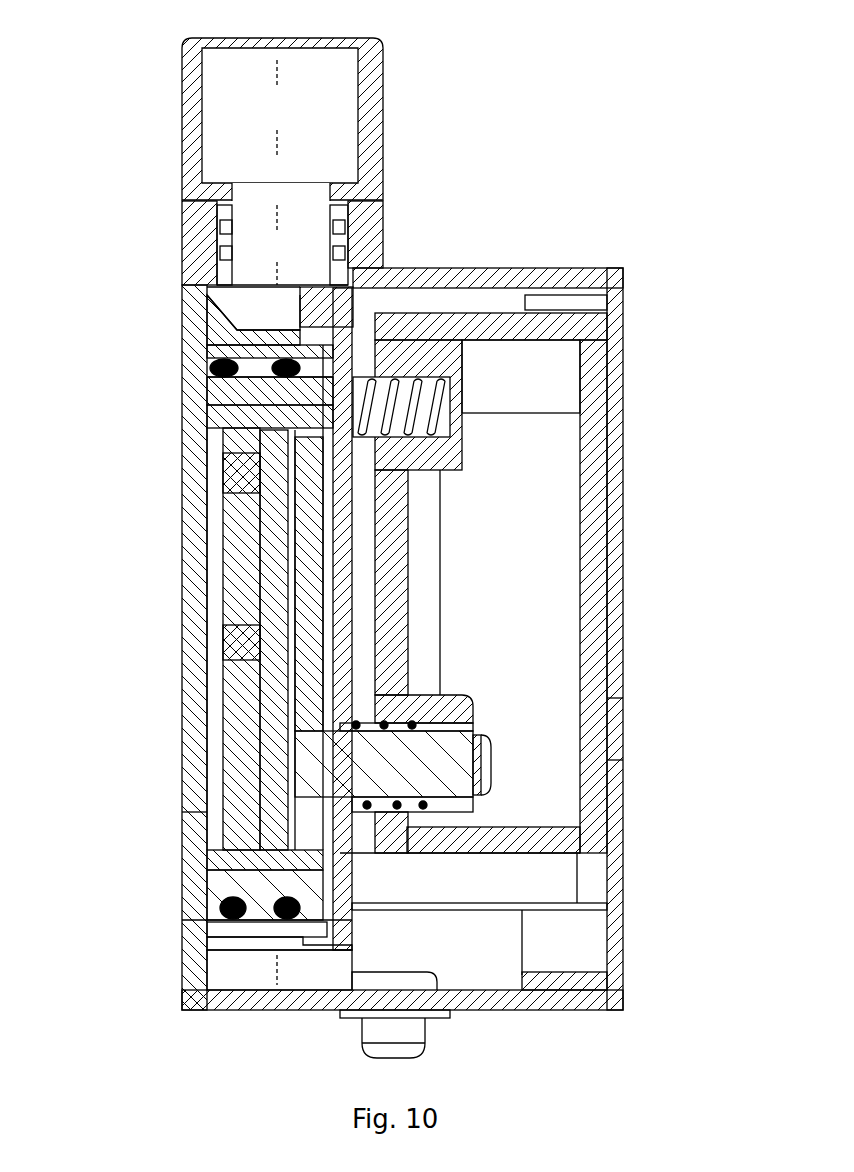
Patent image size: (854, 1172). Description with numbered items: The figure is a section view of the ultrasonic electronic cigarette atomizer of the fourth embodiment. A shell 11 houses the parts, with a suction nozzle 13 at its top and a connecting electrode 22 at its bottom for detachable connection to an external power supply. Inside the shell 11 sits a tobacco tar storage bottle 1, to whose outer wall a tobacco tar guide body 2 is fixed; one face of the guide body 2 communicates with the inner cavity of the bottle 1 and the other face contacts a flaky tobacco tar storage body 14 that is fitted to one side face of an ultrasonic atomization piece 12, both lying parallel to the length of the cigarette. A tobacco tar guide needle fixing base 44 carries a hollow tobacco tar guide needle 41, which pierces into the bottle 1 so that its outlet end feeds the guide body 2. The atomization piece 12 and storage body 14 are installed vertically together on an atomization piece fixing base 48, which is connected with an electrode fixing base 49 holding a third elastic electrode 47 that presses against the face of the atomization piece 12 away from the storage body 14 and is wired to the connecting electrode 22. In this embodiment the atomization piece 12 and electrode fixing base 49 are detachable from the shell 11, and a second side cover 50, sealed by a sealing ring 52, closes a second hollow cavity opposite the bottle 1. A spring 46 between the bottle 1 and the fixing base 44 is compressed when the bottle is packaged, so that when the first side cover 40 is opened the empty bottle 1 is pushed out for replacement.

The tobacco tar storage bottle 1 is at (605, 585).
The tobacco tar guide body 2 is at (315, 768).
The shell 11 is at (176, 262).
The ultrasonic atomization piece 12 is at (255, 689).
The suction nozzle 13 is at (182, 123).
The flaky tobacco tar storage body 14 is at (275, 716).
The connecting electrode 22 is at (442, 1033).
The first side cover 40 is at (628, 302).
The hollow tobacco tar guide needle 41 is at (508, 742).
The tobacco tar guide needle fixing base 44 is at (330, 856).
The spring 46 is at (455, 381).
The third elastic electrode 47 is at (208, 476).
The atomization piece fixing base 48 is at (220, 420).
The electrode fixing base 49 is at (230, 572).
The second side cover 50 is at (182, 812).
The sealing ring 52 is at (210, 367).